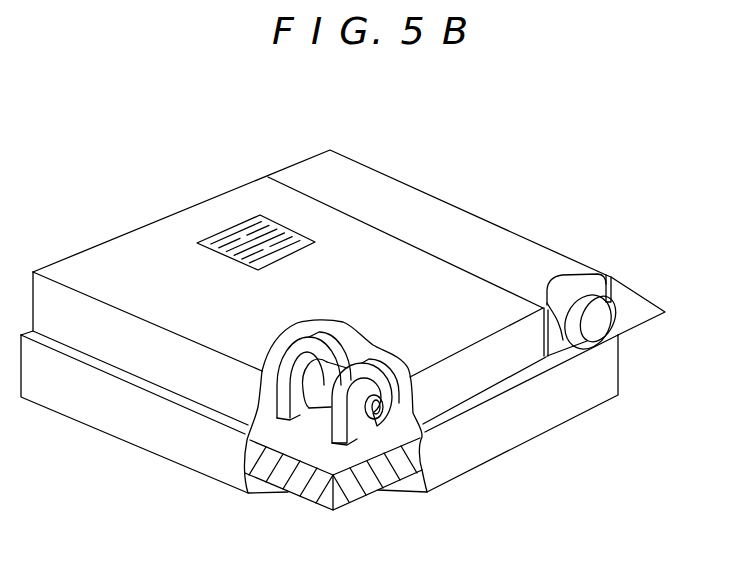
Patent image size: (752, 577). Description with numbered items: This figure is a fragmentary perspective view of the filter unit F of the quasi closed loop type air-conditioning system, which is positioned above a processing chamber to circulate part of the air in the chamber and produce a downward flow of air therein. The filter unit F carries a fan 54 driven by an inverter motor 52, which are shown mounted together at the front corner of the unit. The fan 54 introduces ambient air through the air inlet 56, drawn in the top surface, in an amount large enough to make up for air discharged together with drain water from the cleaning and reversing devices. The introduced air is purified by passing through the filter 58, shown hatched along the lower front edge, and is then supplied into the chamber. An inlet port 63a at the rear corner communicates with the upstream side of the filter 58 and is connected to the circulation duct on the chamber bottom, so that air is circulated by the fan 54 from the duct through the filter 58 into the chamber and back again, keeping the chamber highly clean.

The filter unit F is at (493, 185).
The inverter motor 52 is at (371, 367).
The fan 54 is at (290, 367).
The air inlet 56 is at (247, 227).
The filter 58 is at (363, 485).
The inlet port 63a is at (612, 316).